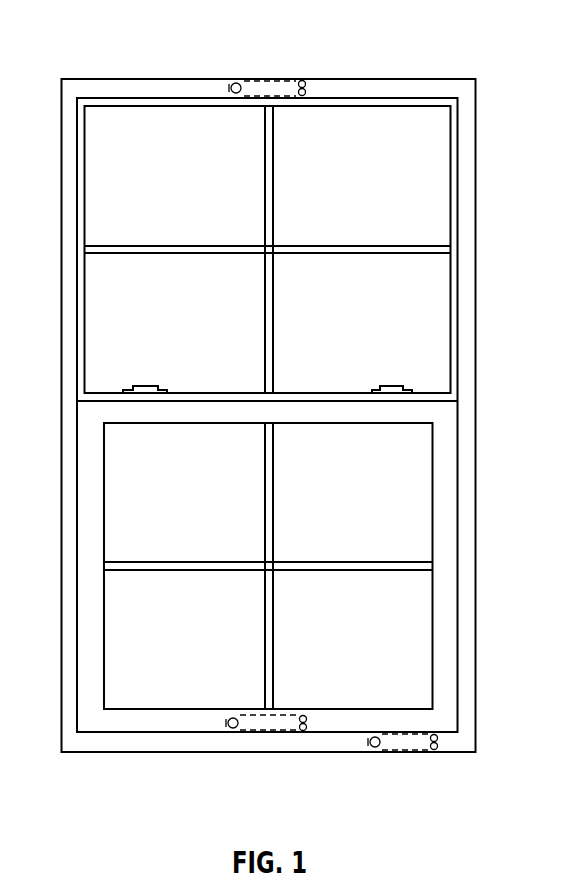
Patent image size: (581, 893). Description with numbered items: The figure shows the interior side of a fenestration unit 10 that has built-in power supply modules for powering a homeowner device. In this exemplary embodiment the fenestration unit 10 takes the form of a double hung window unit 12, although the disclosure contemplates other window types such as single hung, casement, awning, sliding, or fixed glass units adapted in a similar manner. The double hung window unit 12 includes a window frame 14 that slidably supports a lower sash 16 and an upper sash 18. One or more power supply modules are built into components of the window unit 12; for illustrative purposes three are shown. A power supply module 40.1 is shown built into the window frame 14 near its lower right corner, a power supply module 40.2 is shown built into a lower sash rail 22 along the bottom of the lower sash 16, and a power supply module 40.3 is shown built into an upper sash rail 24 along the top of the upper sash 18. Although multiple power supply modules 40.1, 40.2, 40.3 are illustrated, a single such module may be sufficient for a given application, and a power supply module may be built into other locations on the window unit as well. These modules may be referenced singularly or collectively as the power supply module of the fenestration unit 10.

The fenestration unit 10 is at (307, 426).
The double hung window unit 12 is at (307, 426).
The window frame 14 is at (476, 663).
The lower sash 16 is at (440, 511).
The upper sash 18 is at (468, 166).
The lower sash rail 22 is at (128, 742).
The upper sash rail 24 is at (392, 88).
The power supply module 40.1 is at (405, 745).
The power supply module 40.2 is at (258, 724).
The power supply module 40.3 is at (268, 88).